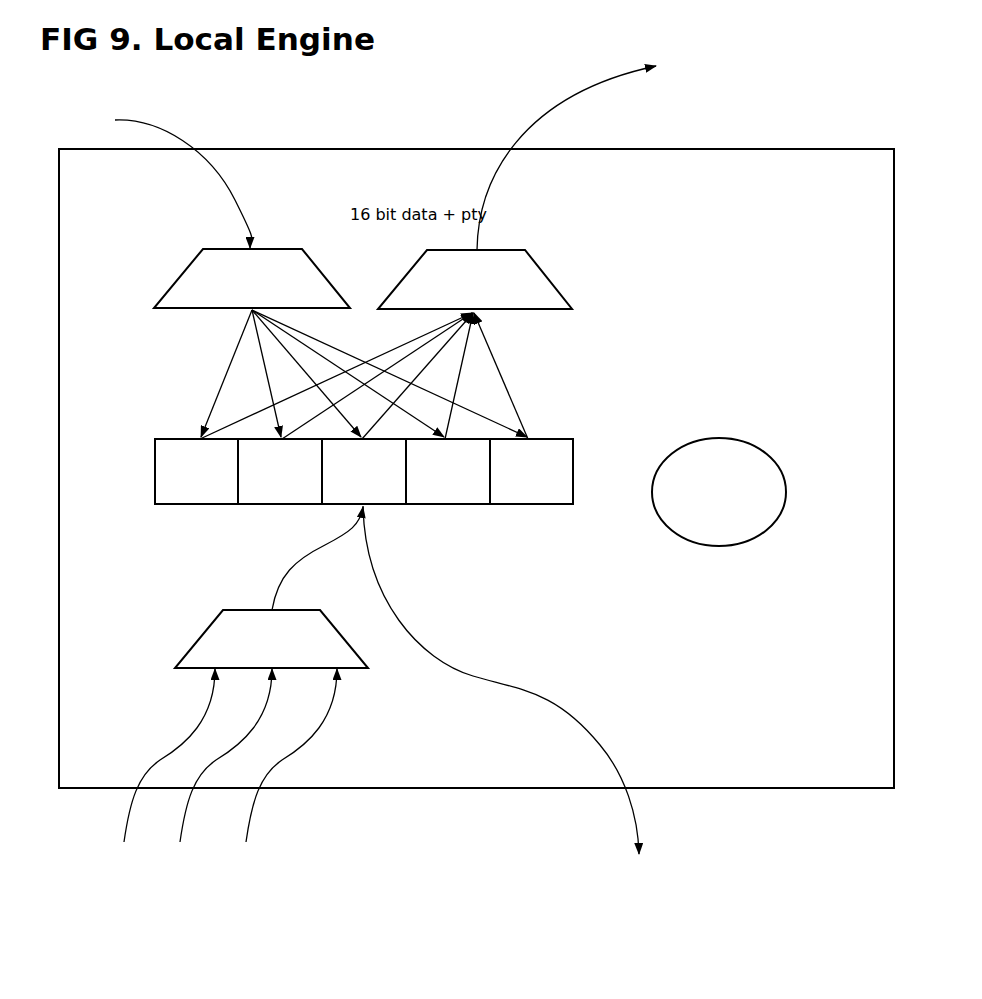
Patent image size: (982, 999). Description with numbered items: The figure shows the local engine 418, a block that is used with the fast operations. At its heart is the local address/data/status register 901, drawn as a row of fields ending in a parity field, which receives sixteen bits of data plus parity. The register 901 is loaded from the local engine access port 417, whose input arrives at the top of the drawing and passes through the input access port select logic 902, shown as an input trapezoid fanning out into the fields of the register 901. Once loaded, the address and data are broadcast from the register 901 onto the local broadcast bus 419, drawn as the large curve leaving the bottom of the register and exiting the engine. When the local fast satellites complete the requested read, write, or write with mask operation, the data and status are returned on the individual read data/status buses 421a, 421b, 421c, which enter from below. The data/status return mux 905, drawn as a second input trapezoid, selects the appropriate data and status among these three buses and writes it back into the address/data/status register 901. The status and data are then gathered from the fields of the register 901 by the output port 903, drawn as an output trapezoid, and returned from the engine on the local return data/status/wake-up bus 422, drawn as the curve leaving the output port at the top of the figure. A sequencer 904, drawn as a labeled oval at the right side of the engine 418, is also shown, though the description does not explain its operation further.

The local engine access port 417 is at (177, 159).
The local engine 418 is at (478, 148).
The local return data/status/wake-up bus 422 is at (566, 148).
The input access port select logic 902 is at (177, 280).
The output port (Out) 903 is at (551, 280).
The local address/data/status register 901 is at (146, 448).
The sequencer 904 is at (789, 491).
The data/status return mux 905 is at (196, 639).
The individual read data/status bus 421a is at (127, 803).
The individual read data/status bus 421b is at (176, 816).
The individual read data/status bus 421c is at (259, 818).
The local broadcast bus 419 is at (629, 817).